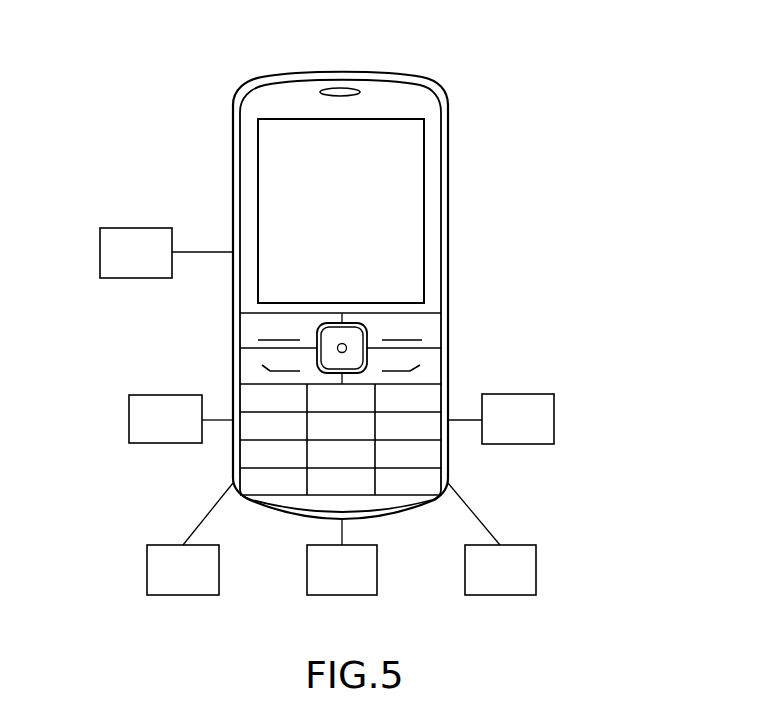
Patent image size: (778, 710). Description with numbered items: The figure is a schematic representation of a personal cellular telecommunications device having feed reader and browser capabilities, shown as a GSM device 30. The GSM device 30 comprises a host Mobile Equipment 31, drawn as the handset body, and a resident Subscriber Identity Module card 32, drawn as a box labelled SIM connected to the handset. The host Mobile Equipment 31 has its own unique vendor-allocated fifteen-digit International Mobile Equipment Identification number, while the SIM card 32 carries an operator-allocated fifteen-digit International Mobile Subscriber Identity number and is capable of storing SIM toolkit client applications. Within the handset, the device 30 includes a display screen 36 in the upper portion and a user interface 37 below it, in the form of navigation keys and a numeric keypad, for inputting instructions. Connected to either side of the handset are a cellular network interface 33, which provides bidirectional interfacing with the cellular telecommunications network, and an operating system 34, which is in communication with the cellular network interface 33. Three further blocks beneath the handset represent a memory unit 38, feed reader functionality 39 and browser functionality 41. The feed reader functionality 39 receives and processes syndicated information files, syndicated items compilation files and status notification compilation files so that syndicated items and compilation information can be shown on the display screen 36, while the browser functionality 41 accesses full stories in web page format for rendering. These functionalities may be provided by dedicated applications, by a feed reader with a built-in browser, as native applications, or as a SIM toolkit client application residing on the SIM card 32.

The GSM device 30 is at (536, 112).
The host Mobile Equipment (ME) 31 is at (309, 73).
The Subscriber Identity Module (SIM) card 32 is at (150, 228).
The cellular network interface 33 is at (554, 423).
The operating system 34 is at (129, 422).
The display screen 36 is at (277, 166).
The user interface 37 is at (413, 358).
The memory unit 38 is at (183, 598).
The feed reader functionality 39 is at (341, 598).
The browser functionality 41 is at (500, 598).